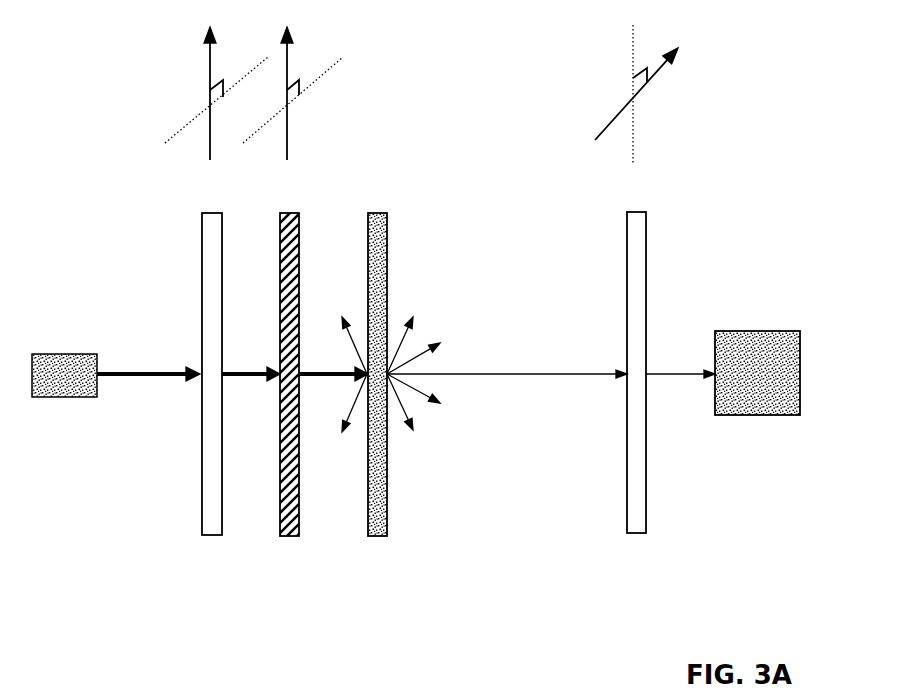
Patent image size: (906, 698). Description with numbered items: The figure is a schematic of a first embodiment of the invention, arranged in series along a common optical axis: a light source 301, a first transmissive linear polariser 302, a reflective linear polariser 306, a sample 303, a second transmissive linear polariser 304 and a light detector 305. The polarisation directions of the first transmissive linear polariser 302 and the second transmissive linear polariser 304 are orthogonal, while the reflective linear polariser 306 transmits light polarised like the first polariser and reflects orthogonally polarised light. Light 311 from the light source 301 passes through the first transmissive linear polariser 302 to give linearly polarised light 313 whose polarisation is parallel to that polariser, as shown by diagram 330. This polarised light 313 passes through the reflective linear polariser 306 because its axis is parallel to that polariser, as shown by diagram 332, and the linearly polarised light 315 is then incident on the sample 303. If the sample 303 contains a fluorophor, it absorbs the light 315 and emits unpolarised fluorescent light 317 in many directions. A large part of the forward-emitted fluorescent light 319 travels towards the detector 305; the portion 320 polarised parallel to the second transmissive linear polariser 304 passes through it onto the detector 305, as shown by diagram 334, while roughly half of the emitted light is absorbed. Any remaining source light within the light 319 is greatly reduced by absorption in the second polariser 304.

The light source 301 is at (67, 380).
The first transmissive linear polariser 302 is at (213, 535).
The sample 303 is at (376, 536).
The second transmissive linear polariser 304 is at (640, 533).
The light detector 305 is at (765, 407).
The reflective linear polariser 306 is at (291, 536).
The light 311 is at (148, 363).
The linearly polarised light 313 is at (251, 363).
The linearly polarised light 315 is at (316, 371).
The unpolarised fluorescent light 317 is at (403, 371).
The forward-emitted fluorescent light 319 is at (507, 362).
The light portion parallel to second polariser 320 is at (680, 349).
The diagram 330 is at (216, 81).
The diagram 332 is at (293, 81).
The diagram 334 is at (636, 82).